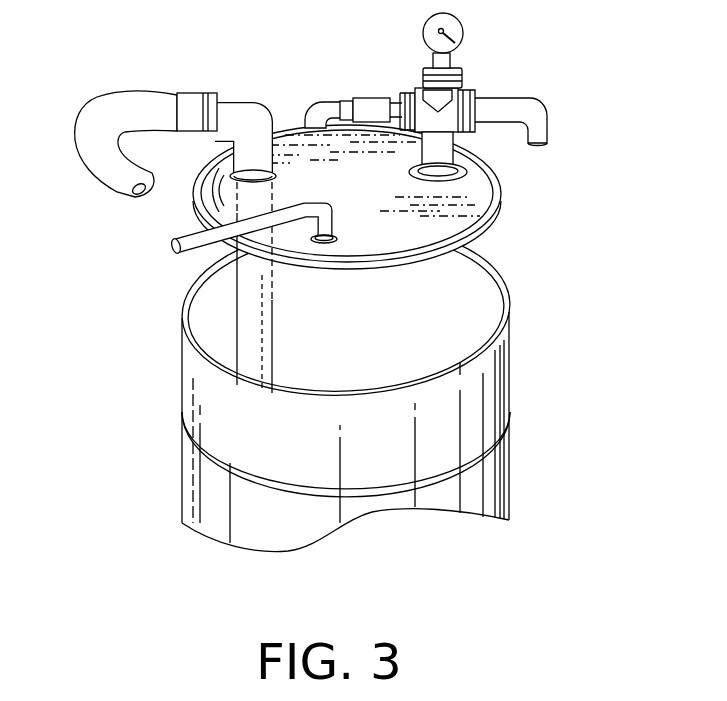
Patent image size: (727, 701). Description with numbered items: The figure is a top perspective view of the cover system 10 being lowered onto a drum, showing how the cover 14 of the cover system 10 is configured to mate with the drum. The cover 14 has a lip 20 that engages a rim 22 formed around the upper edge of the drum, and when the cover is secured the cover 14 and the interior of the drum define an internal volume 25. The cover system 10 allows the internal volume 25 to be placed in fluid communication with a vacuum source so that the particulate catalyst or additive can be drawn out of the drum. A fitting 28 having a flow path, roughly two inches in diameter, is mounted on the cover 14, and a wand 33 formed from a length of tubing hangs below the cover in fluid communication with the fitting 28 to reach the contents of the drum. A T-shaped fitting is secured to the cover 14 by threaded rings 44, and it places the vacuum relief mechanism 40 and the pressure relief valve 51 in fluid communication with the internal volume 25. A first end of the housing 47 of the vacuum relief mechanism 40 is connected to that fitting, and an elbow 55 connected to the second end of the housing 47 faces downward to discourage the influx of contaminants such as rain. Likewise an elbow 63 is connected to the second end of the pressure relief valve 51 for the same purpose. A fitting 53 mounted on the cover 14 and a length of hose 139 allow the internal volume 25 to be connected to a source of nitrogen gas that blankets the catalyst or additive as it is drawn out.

The cover system 10 is at (130, 56).
The cover 14 is at (364, 191).
The lip 20 is at (480, 228).
The rim 22 is at (183, 326).
The internal volume 25 is at (405, 343).
The fitting 28 is at (255, 120).
The wand 33 is at (250, 316).
The hose 139 is at (200, 237).
The fitting 53 is at (331, 223).
The elbow 63 is at (318, 111).
The pressure relief valve 51 is at (364, 110).
The vacuum relief mechanism 40 is at (512, 92).
The threaded rings 44 is at (453, 180).
The housing 47 is at (497, 117).
The elbow 55 is at (527, 118).